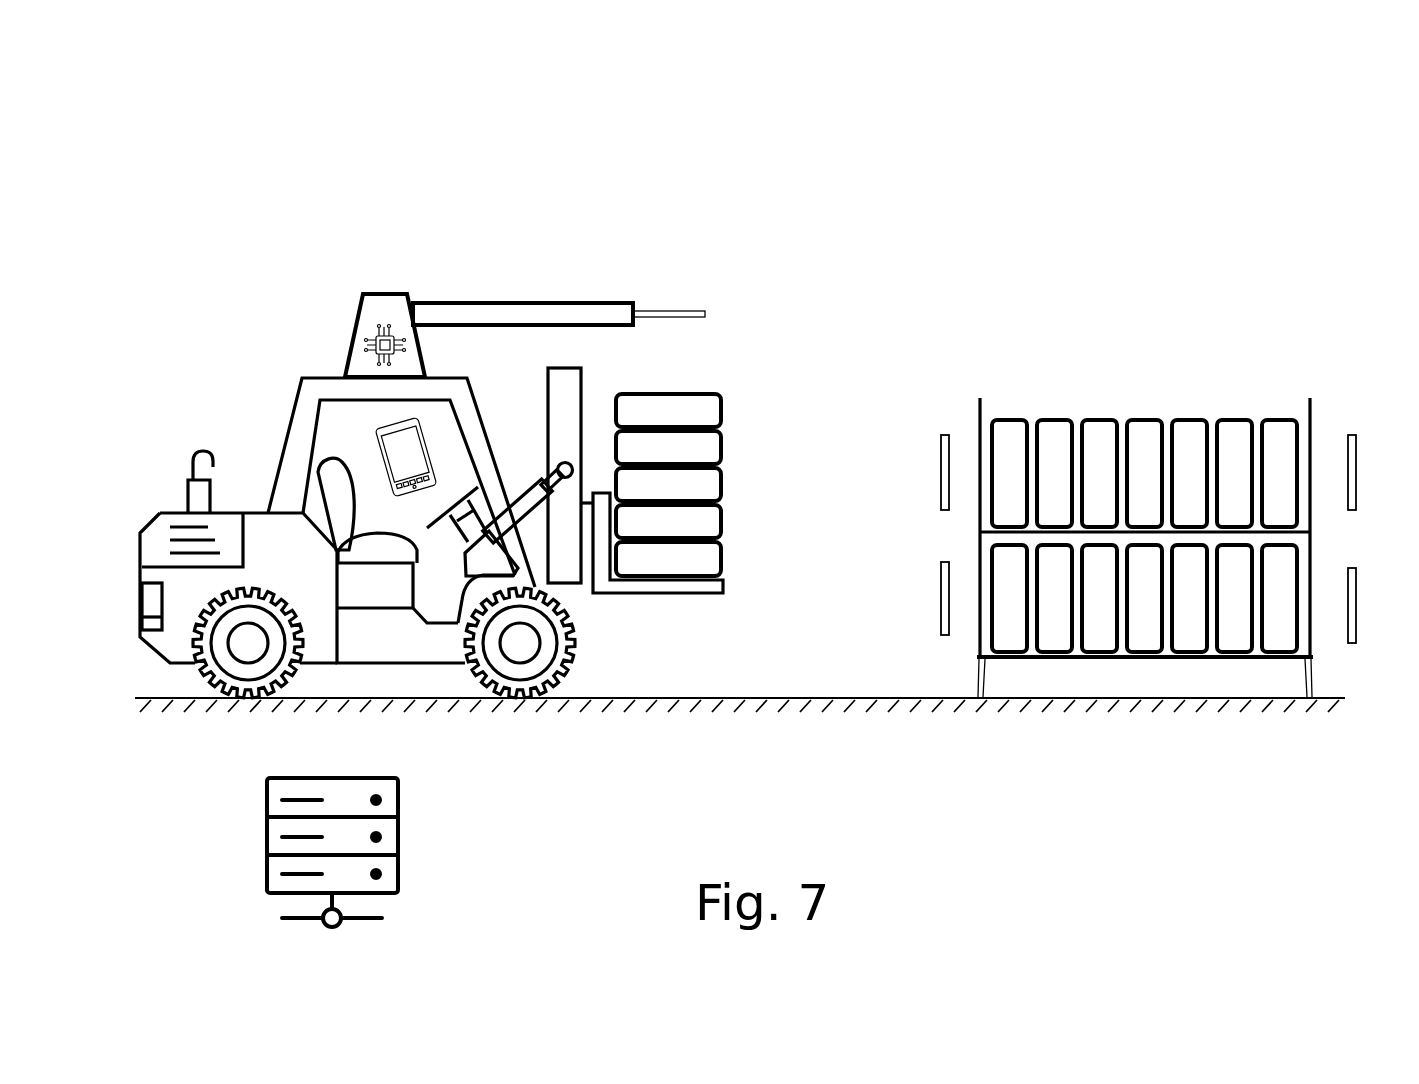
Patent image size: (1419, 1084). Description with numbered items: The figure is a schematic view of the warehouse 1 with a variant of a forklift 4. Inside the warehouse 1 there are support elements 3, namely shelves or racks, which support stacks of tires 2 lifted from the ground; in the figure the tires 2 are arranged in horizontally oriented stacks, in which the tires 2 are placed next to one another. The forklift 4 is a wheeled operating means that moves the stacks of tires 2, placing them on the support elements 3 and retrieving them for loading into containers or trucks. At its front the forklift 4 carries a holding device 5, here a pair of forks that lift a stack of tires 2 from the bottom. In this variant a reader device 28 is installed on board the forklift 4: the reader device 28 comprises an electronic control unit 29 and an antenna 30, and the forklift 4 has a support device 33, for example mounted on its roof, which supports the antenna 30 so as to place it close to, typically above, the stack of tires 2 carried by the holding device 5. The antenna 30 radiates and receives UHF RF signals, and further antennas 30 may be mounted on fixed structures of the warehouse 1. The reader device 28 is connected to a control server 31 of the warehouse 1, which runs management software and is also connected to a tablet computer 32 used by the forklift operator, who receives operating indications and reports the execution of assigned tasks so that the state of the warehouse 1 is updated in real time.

The warehouse 1 is at (1238, 140).
The tires 2 is at (700, 452).
The support elements 3 is at (1057, 673).
The forklift 4 is at (230, 326).
The holding device 5 is at (646, 606).
The reader device 28 is at (720, 199).
The electronic control unit 29 is at (380, 352).
The antenna 30 is at (673, 310).
The control server 31 is at (345, 841).
The tablet computer 32 is at (402, 450).
The support device 33 is at (385, 302).